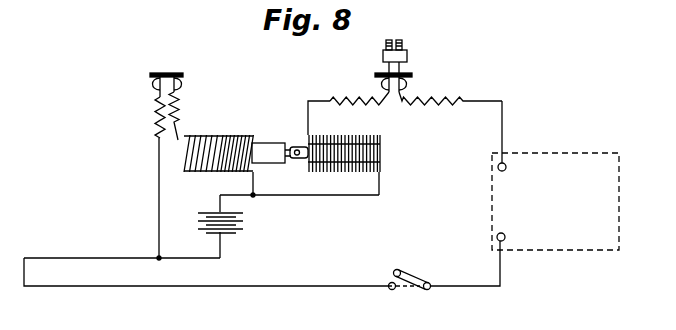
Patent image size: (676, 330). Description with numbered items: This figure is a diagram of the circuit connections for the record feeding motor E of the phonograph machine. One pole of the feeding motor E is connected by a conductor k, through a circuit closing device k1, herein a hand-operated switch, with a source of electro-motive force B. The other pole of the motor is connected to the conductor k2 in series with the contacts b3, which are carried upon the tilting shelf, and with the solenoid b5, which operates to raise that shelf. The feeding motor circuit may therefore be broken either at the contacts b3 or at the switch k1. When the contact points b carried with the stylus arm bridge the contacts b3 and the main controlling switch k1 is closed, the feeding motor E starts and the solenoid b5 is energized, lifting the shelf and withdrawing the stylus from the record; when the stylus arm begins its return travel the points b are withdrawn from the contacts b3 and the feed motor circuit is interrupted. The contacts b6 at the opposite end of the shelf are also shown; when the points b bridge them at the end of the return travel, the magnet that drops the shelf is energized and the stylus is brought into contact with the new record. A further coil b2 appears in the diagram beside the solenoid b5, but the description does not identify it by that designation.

The contact points b is at (400, 67).
The coil b2 is at (231, 138).
The contacts b3 is at (408, 80).
The solenoid b5 is at (381, 140).
The contacts b6 is at (176, 73).
The conductor k is at (480, 288).
The circuit closing device k1 is at (414, 275).
The conductor k2 is at (520, 129).
The feeding motor E is at (555, 201).
The source of electro-motive force B is at (232, 240).